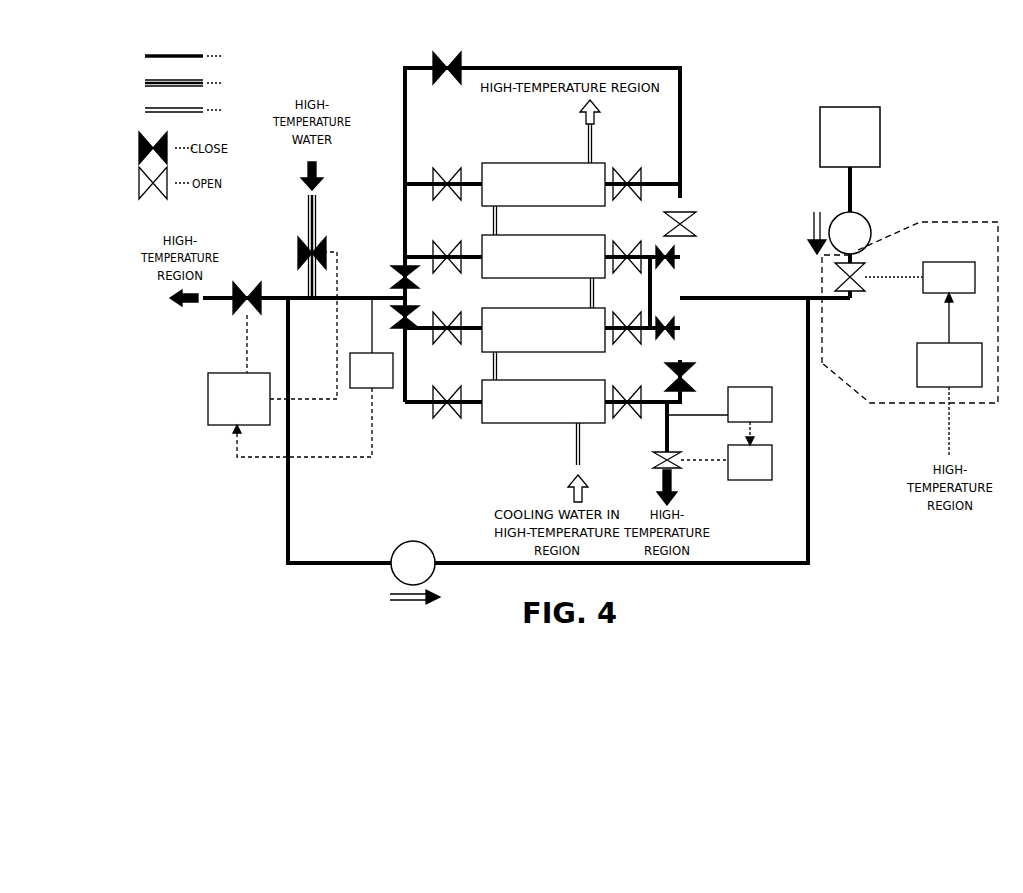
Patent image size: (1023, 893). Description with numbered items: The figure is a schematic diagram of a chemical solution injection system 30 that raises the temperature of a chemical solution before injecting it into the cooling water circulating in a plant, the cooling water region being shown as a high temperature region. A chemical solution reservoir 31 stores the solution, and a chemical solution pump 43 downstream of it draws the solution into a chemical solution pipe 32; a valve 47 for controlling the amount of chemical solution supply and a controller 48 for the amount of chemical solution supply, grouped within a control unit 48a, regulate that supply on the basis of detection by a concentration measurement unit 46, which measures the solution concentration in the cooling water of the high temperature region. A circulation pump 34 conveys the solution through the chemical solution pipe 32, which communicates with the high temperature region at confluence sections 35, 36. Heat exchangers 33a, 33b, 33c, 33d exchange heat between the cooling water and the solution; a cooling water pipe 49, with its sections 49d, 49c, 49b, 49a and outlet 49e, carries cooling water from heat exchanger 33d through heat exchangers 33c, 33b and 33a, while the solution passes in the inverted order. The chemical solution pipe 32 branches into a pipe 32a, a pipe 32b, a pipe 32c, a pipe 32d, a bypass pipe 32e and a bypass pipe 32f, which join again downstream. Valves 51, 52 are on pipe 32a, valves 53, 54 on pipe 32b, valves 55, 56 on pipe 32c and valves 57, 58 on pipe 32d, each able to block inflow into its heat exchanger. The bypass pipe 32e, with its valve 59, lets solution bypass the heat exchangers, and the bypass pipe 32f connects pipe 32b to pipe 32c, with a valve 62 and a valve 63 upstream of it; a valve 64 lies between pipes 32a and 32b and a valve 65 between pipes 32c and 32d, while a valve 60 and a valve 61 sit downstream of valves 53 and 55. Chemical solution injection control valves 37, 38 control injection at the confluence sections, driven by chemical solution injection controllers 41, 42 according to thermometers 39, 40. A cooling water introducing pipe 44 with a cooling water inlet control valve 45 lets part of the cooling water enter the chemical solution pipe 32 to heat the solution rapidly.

The chemical solution injection system 30 is at (779, 75).
The chemical solution reservoir 31 is at (880, 137).
The chemical solution pipe 32 is at (840, 324).
The pipe 32a is at (415, 178).
The pipe 32b is at (416, 250).
The pipe 32c is at (668, 333).
The pipe 32d is at (652, 406).
The bypass pipe 32e is at (535, 56).
The bypass pipe 32f is at (656, 290).
The heat exchanger 33a is at (557, 163).
The heat exchanger 33b is at (557, 235).
The heat exchanger 33c is at (557, 308).
The heat exchanger 33d is at (557, 380).
The circulation pump 34 is at (415, 541).
The confluence section 35 is at (218, 306).
The confluence section 36 is at (657, 471).
The chemical solution injection control valve 37 is at (248, 282).
The chemical solution injection control valve 38 is at (652, 460).
The thermometer 39 is at (387, 390).
The thermometer 40 is at (761, 387).
The chemical solution injection controller 41 is at (208, 402).
The chemical solution injection controller 42 is at (753, 481).
The chemical solution pump 43 is at (871, 232).
The cooling water introducing pipe 44 is at (333, 215).
The cooling water inlet control valve 45 is at (308, 240).
The concentration measurement unit 46 is at (917, 364).
The valve for controlling the amount of chemical solution supply 47 is at (866, 267).
The controller for the amount of chemical solution supply 48 is at (954, 262).
The control unit 48a is at (968, 218).
The cooling water pipe 49 is at (194, 111).
The cooling water pipe a 49a is at (498, 226).
The cooling water pipe b 49b is at (595, 290).
The cooling water pipe c 49c is at (498, 371).
The cooling water inlet pipe 49d is at (577, 450).
The cooling water outlet pipe 49e is at (593, 144).
The valve 51 is at (447, 168).
The valve 52 is at (628, 168).
The valve 53 is at (448, 241).
The valve 54 is at (628, 241).
The valve 55 is at (448, 312).
The valve 56 is at (628, 312).
The valve 57 is at (448, 386).
The valve 58 is at (628, 386).
The valve 59 is at (444, 55).
The valve 60 is at (403, 268).
The valve 61 is at (403, 325).
The valve 62 is at (676, 260).
The valve 63 is at (676, 329).
The valve 64 is at (700, 222).
The valve 65 is at (697, 377).